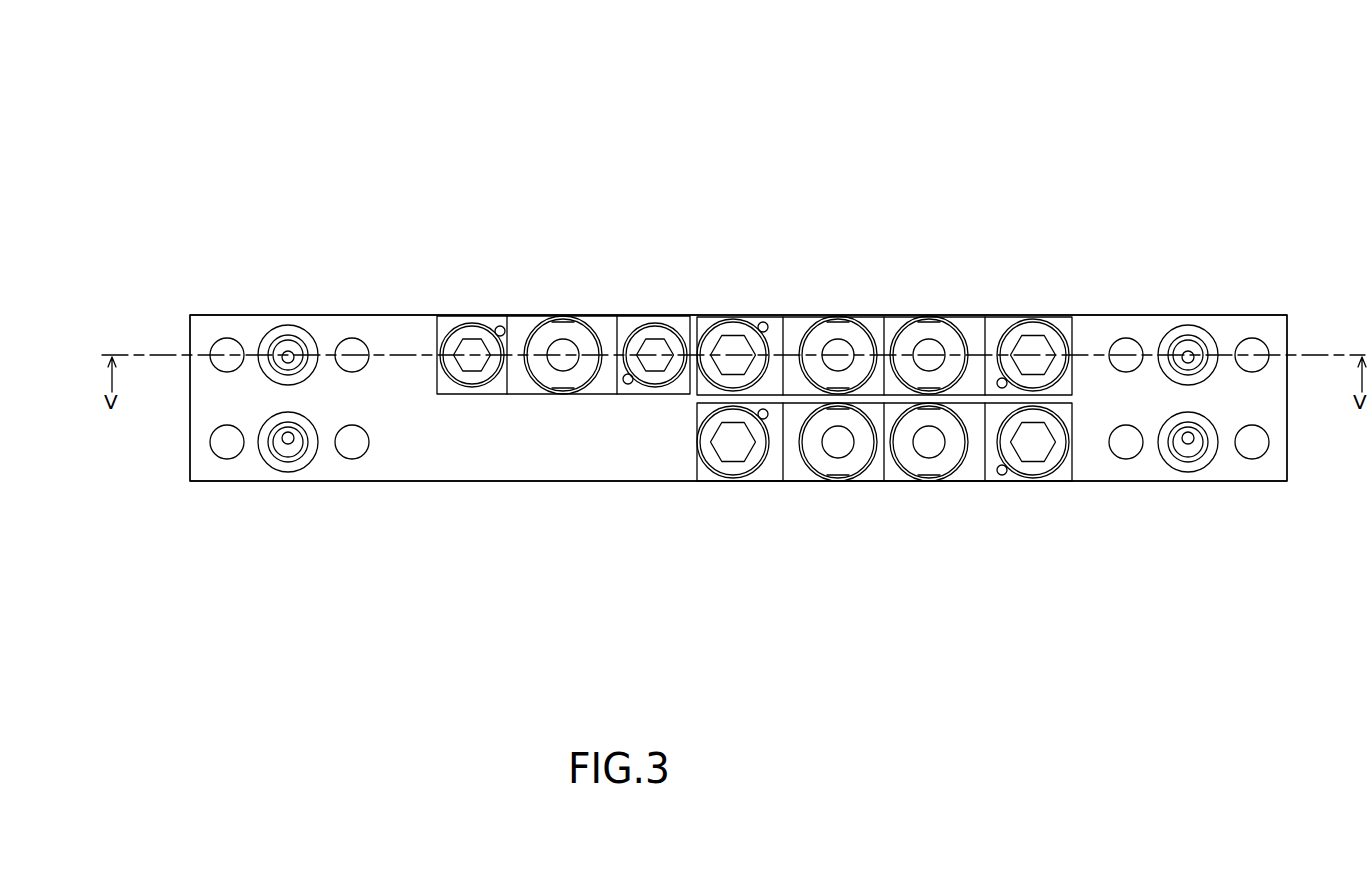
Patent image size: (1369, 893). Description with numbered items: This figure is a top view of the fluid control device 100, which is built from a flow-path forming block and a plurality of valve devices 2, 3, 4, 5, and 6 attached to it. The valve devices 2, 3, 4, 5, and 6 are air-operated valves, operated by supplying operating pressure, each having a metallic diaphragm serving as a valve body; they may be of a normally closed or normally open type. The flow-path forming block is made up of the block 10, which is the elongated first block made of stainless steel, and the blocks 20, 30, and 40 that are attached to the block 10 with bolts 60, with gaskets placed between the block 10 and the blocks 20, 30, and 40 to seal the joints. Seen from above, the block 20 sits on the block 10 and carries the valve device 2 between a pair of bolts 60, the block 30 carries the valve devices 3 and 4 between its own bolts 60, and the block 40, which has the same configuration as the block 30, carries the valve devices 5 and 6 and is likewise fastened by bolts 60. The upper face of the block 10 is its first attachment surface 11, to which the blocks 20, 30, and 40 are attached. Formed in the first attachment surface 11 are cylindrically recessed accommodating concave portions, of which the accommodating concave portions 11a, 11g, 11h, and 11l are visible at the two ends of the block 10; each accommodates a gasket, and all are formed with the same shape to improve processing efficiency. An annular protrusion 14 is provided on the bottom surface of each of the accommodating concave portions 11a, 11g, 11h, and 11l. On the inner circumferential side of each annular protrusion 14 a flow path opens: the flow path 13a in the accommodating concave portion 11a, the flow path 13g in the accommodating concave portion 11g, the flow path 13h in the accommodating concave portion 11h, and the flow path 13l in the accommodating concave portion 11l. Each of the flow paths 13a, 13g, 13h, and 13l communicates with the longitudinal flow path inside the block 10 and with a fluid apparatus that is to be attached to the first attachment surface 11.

The fluid control device 100 is at (1212, 122).
The block 10 is at (472, 461).
The first attachment surface 11 is at (620, 453).
The accommodating concave portion 11a is at (278, 330).
The accommodating concave portion 11g is at (1198, 333).
The accommodating concave portion 11h is at (278, 467).
The accommodating concave portion 11l is at (1198, 467).
The flow path 13a is at (295, 350).
The flow path 13g is at (1180, 350).
The flow path 13h is at (293, 445).
The flow path 13l is at (1185, 440).
The annular protrusion 14 is at (303, 350).
The block 20 is at (523, 323).
The block 30 is at (797, 323).
The block 40 is at (797, 470).
The valve device 2 is at (563, 333).
The valve device 3 is at (837, 333).
The valve device 4 is at (929, 330).
The valve device 5 is at (838, 465).
The valve device 6 is at (929, 467).
The bolt 60 is at (473, 333).